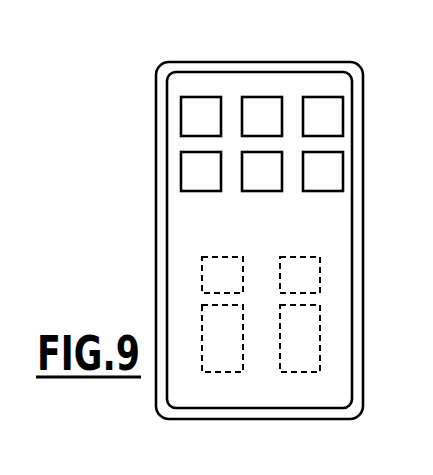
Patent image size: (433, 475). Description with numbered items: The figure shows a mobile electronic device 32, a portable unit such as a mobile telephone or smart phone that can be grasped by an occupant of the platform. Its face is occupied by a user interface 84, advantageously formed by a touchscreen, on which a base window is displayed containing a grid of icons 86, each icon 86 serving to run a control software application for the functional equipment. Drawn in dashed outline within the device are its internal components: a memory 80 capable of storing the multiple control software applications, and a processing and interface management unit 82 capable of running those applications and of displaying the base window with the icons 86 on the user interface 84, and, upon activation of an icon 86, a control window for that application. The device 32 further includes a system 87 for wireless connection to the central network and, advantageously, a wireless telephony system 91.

The mobile electronic device 32 is at (166, 52).
The memory 80 is at (225, 358).
The processing and interface management unit 82 is at (313, 338).
The user interface 84 is at (198, 219).
The icons 86 is at (250, 107).
The system for wireless connection 87 is at (312, 277).
The wireless telephony system 91 is at (205, 276).